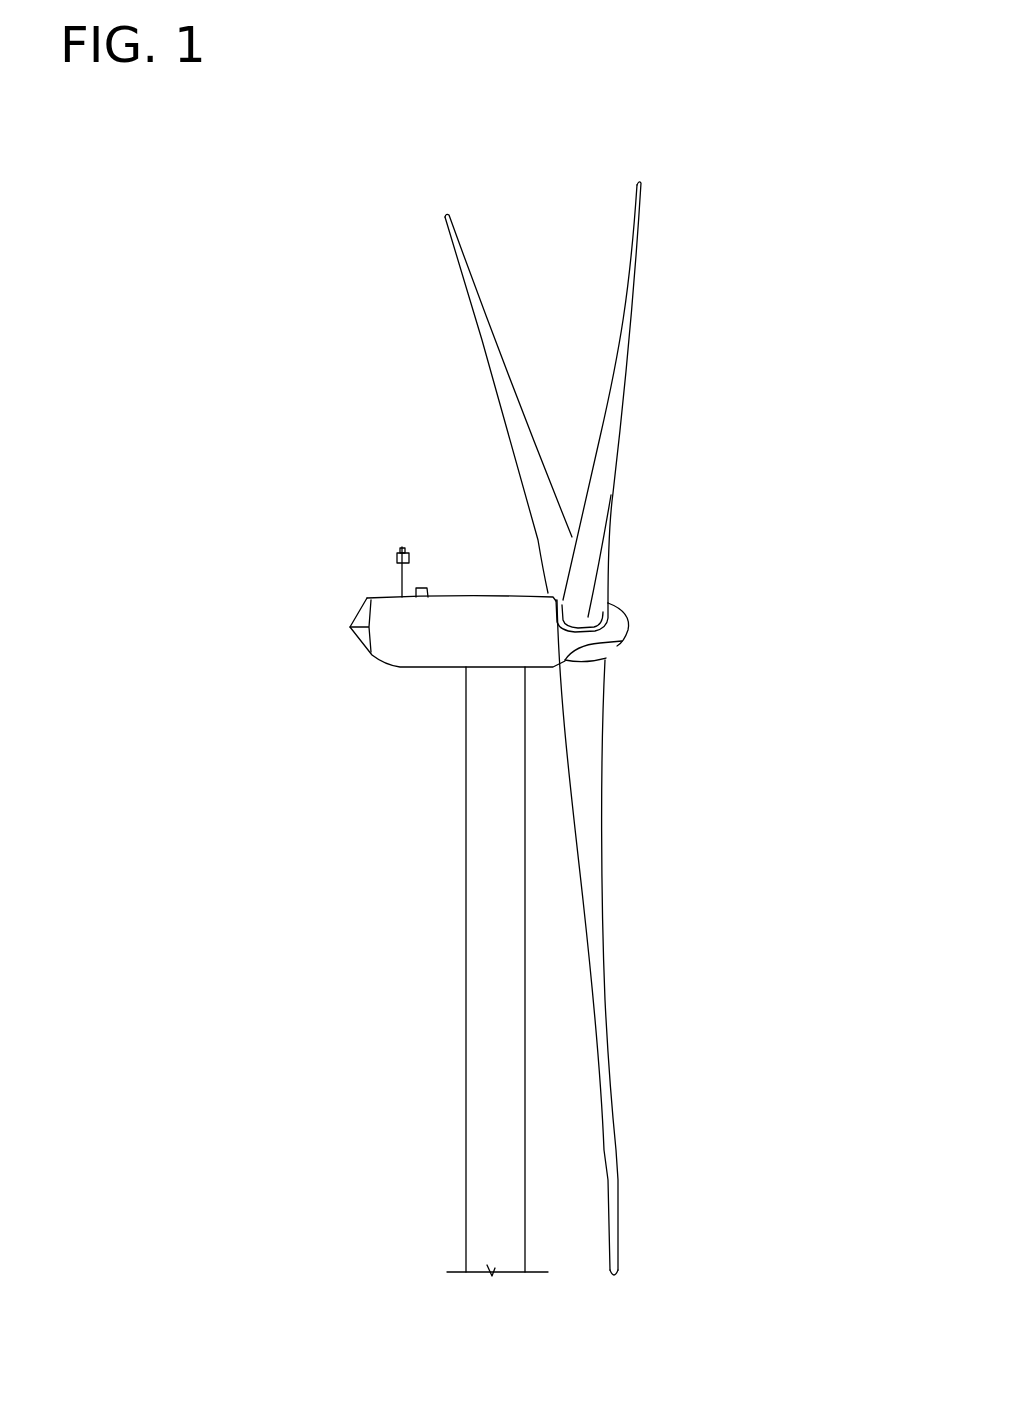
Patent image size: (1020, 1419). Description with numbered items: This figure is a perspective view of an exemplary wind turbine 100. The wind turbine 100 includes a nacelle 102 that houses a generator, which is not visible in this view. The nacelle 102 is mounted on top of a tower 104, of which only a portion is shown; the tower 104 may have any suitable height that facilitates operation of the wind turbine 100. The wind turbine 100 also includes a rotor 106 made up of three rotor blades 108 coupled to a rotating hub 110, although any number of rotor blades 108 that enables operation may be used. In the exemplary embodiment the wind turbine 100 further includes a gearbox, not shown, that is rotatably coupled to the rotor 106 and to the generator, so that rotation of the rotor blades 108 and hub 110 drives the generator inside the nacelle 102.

The wind turbine 100 is at (340, 262).
The nacelle 102 is at (398, 670).
The tower 104 is at (466, 925).
The rotor 106 is at (680, 384).
The rotor blades 108 is at (480, 297).
The rotating hub 110 is at (622, 640).